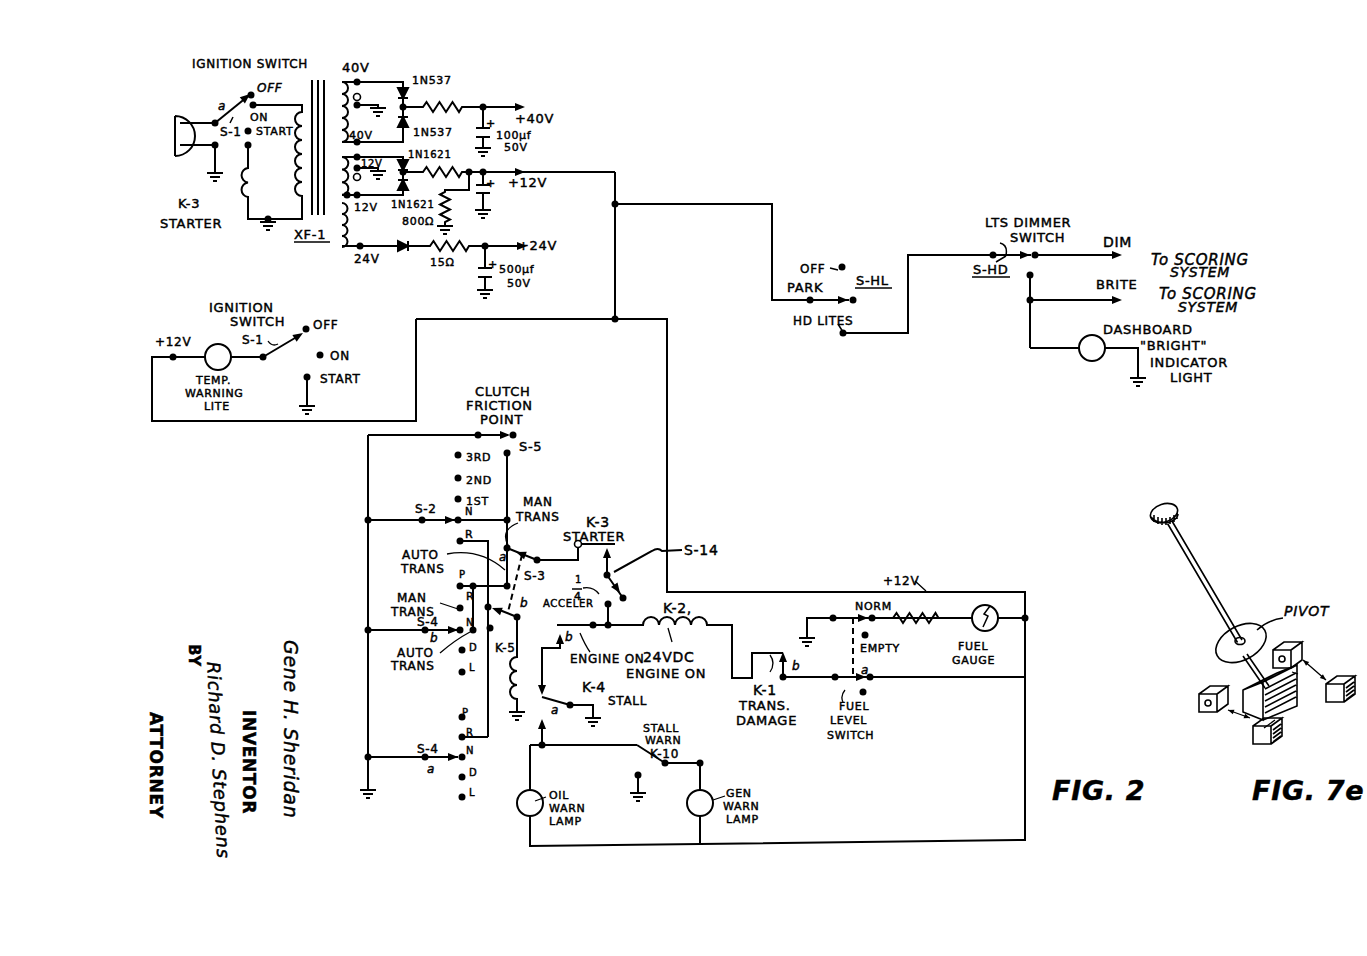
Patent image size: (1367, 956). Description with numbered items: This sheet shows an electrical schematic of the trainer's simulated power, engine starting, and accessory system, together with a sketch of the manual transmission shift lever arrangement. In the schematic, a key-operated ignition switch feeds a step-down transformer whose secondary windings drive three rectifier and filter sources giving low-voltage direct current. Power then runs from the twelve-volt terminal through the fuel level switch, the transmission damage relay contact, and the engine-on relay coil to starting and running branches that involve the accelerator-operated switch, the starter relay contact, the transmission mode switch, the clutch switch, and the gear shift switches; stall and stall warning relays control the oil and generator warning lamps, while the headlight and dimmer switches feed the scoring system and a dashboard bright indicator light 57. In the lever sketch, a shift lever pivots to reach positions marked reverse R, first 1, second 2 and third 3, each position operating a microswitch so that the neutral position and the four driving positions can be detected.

In FIG. 7E, the first gear lever position 1 is at (1120, 540).
In FIG. 7E, the second gear lever position 2 is at (1183, 507).
In FIG. 7E, the third gear lever position 3 is at (1203, 493).
In FIG. 7E, the reverse lever position R is at (1150, 528).
In FIG. 2, the dashboard bright indicator light 57 is at (1092, 348).